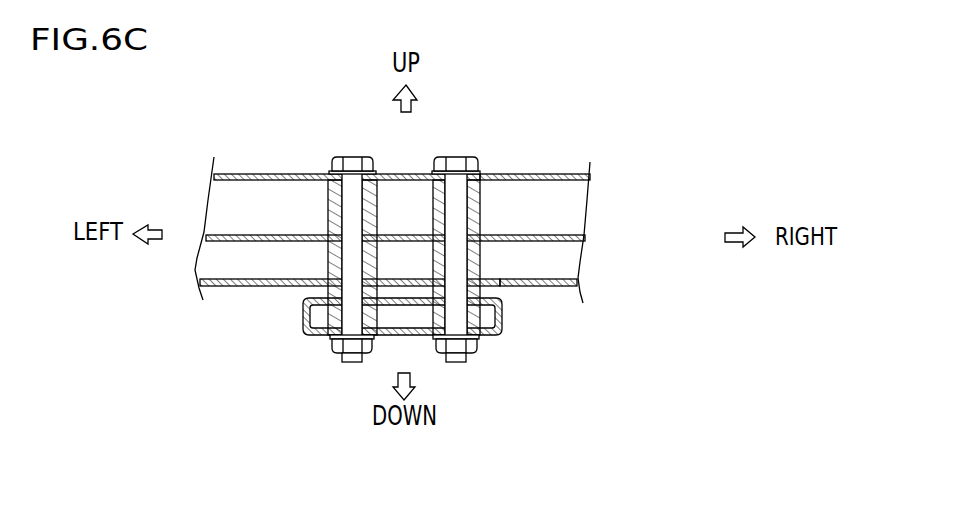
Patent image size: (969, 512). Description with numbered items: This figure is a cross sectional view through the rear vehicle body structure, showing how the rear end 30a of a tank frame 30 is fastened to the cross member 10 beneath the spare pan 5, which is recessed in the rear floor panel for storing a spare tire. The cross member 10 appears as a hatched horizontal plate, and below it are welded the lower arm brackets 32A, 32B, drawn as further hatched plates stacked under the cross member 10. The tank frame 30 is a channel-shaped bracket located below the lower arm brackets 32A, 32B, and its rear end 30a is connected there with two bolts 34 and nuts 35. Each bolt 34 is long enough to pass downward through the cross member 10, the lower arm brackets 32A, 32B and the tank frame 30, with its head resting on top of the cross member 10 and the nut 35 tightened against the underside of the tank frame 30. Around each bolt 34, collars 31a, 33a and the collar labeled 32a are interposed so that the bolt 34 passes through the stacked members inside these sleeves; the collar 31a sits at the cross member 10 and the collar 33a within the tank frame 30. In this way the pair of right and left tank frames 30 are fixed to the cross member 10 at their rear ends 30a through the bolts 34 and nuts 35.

The spare pan 5 is at (522, 175).
The cross member 10 is at (430, 226).
The collar 31a is at (483, 208).
The middle plate portion 32a is at (490, 267).
The lower arm bracket 32A is at (552, 270).
The lower arm bracket 32B is at (560, 287).
The tank frame 30 is at (304, 318).
The rear end 30a is at (290, 355).
The collar 33a is at (482, 314).
The bolt 34 is at (352, 193).
The nut 35 is at (336, 346).